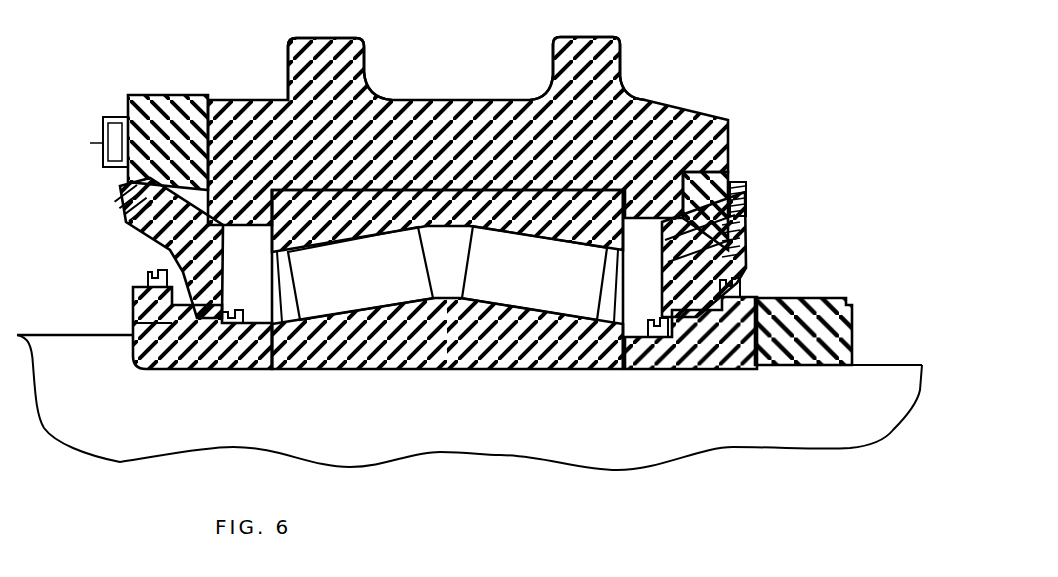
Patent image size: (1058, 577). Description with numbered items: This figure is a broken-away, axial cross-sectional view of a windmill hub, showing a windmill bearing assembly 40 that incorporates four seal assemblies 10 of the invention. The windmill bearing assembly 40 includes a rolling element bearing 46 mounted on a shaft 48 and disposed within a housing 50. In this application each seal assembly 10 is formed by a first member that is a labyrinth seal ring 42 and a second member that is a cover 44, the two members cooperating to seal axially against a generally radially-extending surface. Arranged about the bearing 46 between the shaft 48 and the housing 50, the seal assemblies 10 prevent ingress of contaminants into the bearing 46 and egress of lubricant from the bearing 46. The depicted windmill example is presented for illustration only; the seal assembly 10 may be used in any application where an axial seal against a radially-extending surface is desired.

The seal assembly 10 is at (137, 272).
The windmill bearing assembly 40 is at (743, 72).
The labyrinth seal ring 42 is at (131, 305).
The cover 44 is at (167, 240).
The rolling element bearing 46 is at (437, 372).
The shaft 48 is at (778, 433).
The housing 50 is at (411, 96).